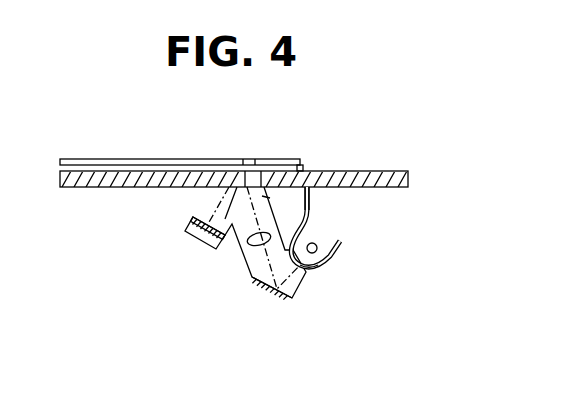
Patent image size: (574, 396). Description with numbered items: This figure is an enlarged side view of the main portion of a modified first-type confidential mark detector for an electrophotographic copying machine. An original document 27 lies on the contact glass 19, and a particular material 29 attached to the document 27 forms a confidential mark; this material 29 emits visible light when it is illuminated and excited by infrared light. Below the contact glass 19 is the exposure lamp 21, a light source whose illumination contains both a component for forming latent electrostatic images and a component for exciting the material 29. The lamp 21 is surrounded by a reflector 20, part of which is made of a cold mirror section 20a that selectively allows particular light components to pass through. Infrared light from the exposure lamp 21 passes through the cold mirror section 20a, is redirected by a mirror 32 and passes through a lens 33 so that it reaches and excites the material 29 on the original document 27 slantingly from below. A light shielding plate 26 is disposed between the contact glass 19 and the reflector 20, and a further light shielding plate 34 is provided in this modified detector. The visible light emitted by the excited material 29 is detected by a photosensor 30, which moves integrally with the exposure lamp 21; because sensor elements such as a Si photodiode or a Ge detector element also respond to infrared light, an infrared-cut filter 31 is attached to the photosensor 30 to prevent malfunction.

The contact glass 19 is at (381, 171).
The reflector 20 is at (337, 258).
The cold mirror section 20a is at (313, 265).
The exposure lamp 21 is at (318, 244).
The light shielding plate 26 is at (309, 191).
The original document 27 is at (141, 158).
The particular material 29 is at (238, 160).
The photosensor 30 is at (190, 245).
The infrared-cut filter 31 is at (203, 218).
The mirror 32 is at (260, 291).
The lens 33 is at (247, 250).
The light shielding plate 34 is at (262, 197).